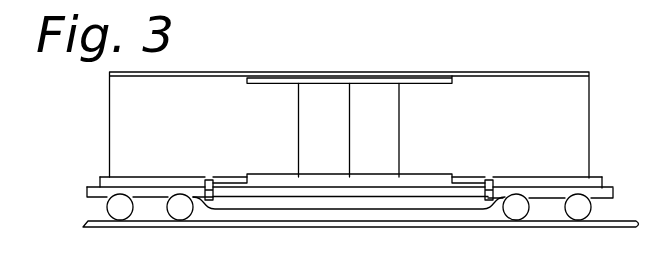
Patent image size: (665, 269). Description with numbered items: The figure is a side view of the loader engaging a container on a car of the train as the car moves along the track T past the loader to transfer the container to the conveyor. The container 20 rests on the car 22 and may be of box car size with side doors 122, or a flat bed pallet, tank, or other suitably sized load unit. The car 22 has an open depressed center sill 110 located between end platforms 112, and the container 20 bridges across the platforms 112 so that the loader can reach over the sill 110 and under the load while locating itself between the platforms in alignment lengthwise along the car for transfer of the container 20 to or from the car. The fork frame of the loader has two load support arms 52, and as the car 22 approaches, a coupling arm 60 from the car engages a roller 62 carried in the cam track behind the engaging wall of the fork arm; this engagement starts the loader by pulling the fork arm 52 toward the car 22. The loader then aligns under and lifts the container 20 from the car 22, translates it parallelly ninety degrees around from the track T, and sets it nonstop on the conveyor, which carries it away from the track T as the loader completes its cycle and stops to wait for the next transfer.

The container 20 is at (110, 113).
The car 22 is at (101, 176).
The end platform 112 is at (100, 178).
The load support arm 52 is at (247, 152).
The roller 62 is at (210, 178).
The coupling arm 60 is at (495, 182).
The side door 122 is at (370, 90).
The center sill 110 is at (420, 200).
The track T is at (87, 221).